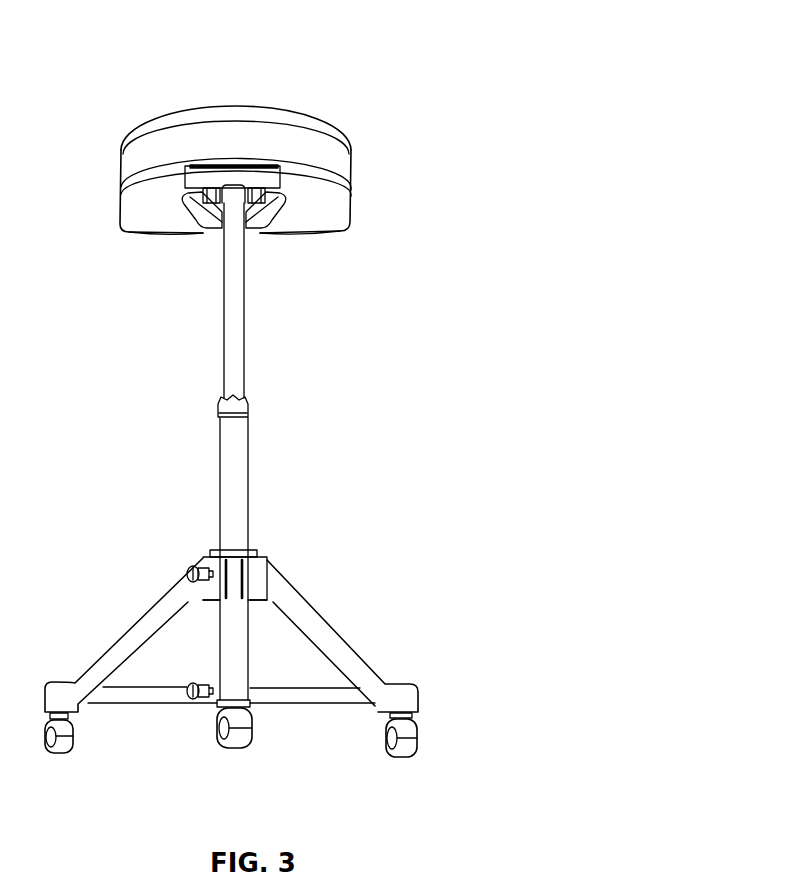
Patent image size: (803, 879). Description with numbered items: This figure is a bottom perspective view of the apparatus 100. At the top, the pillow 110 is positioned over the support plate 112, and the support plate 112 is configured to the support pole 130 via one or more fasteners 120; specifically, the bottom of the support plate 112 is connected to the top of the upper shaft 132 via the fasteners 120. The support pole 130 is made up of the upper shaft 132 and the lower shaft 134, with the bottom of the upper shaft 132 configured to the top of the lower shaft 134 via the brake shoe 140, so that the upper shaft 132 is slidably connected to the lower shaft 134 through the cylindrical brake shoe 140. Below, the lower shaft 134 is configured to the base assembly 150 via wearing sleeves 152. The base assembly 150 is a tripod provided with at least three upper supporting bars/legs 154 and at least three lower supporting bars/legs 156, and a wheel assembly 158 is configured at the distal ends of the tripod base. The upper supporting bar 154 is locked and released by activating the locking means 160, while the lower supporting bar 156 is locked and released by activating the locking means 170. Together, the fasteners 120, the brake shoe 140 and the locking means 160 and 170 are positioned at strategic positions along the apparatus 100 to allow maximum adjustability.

The apparatus 100 is at (321, 58).
The pillow 110 is at (203, 108).
The support plate 112 is at (320, 227).
The fasteners 120 is at (233, 188).
The support pole 130 is at (321, 386).
The upper shaft 132 is at (233, 318).
The lower shaft 134 is at (233, 467).
The brake shoe 140 is at (246, 402).
The base assembly 150 is at (322, 591).
The wearing sleeves 152 is at (254, 562).
The upper supporting bars/legs 154 is at (122, 632).
The lower supporting bars/legs 156 is at (128, 695).
The wheel assembly 158 is at (55, 753).
The locking means 160 is at (189, 572).
The locking means 170 is at (188, 690).